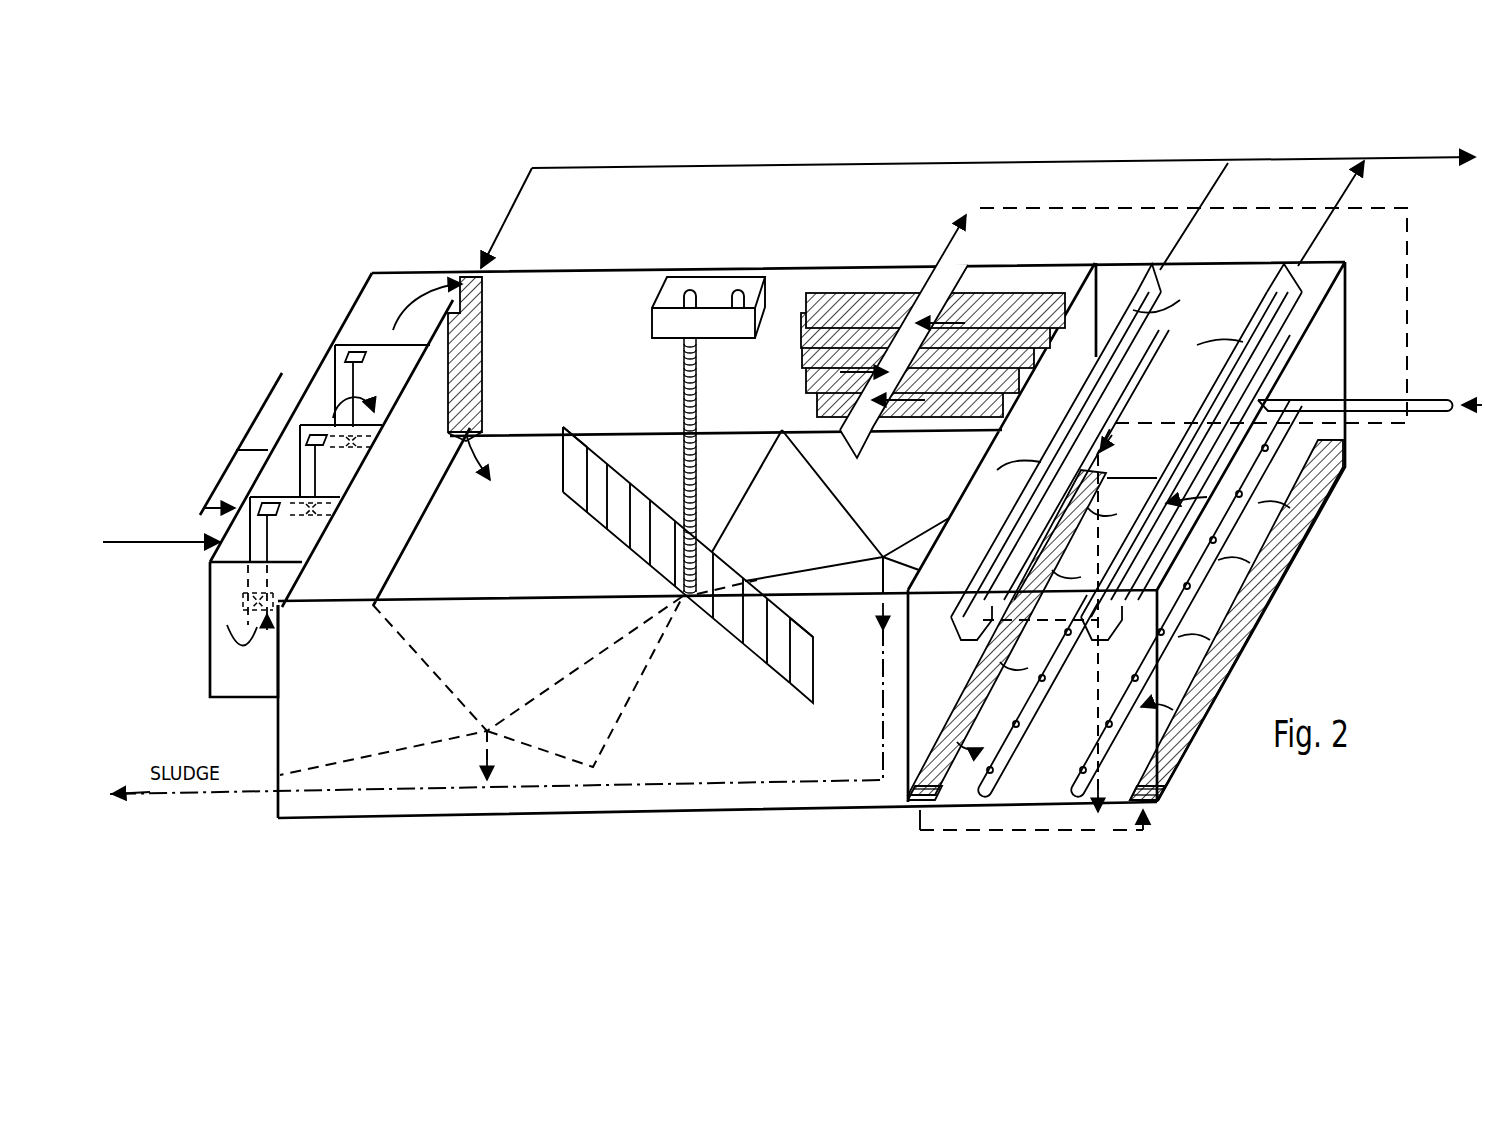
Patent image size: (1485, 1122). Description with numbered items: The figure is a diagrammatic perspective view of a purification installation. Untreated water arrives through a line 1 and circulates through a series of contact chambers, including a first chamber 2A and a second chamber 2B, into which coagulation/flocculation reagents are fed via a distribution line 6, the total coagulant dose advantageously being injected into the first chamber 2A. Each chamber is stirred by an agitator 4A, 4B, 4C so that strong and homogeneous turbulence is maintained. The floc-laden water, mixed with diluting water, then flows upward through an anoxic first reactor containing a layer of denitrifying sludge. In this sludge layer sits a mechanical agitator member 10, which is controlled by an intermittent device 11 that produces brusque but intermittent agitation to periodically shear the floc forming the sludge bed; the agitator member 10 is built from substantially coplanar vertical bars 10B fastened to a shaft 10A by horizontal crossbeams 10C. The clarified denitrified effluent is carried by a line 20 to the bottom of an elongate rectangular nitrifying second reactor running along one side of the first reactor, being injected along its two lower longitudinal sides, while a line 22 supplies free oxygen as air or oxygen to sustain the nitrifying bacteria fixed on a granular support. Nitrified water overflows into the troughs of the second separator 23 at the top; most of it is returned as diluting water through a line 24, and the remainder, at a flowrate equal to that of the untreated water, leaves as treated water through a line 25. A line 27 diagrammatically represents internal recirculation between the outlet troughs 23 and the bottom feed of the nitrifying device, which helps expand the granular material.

The line 1 is at (147, 548).
The first contact chamber 2A is at (226, 516).
The second contact chamber 2B is at (333, 470).
The agitator 4A is at (267, 530).
The agitator 4B is at (314, 457).
The agitator 4C is at (352, 380).
The distribution line 6 is at (260, 410).
The agitator member 10 is at (627, 461).
The shaft 10A is at (698, 380).
The vertical bars 10B is at (603, 512).
The horizontal crossbeams 10C is at (826, 735).
The intermittent device 11 is at (713, 292).
The line 20 is at (1408, 252).
The line 22 is at (1422, 393).
The second separator (troughs) 23 is at (1298, 286).
The line 24 is at (1053, 157).
The line 25 is at (1392, 157).
The line 27 is at (1043, 830).